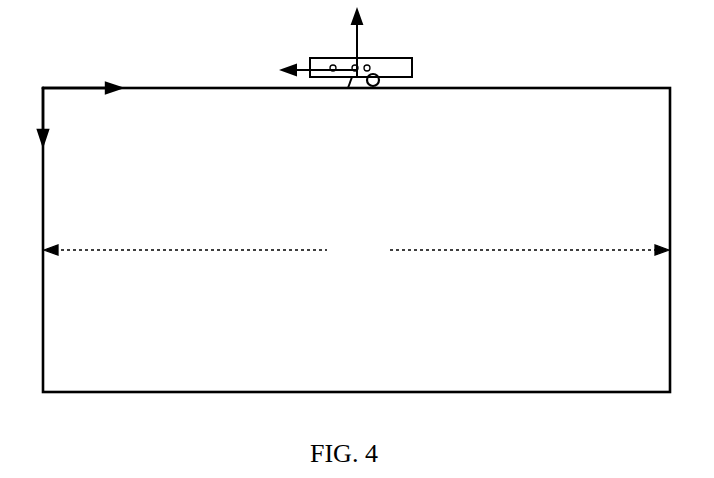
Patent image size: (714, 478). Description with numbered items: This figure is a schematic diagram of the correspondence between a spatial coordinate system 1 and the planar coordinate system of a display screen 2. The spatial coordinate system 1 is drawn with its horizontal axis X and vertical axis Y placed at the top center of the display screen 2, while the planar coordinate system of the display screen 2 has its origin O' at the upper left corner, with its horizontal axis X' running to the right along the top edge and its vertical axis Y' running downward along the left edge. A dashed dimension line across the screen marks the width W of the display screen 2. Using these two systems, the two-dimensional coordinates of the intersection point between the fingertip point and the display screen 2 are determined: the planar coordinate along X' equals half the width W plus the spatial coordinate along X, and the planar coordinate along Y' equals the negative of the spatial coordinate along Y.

The spatial coordinate system 1 is at (605, 97).
The display screen 2 is at (408, 58).
The width of the display screen W is at (356, 250).
The x axis of the spatial coordinate system X is at (304, 71).
The y axis of the spatial coordinate system Y is at (370, 43).
The x' axis of the planar coordinate system X' is at (83, 103).
The y' axis of the planar coordinate system Y' is at (58, 116).
The origin of the planar coordinate system O' is at (33, 74).